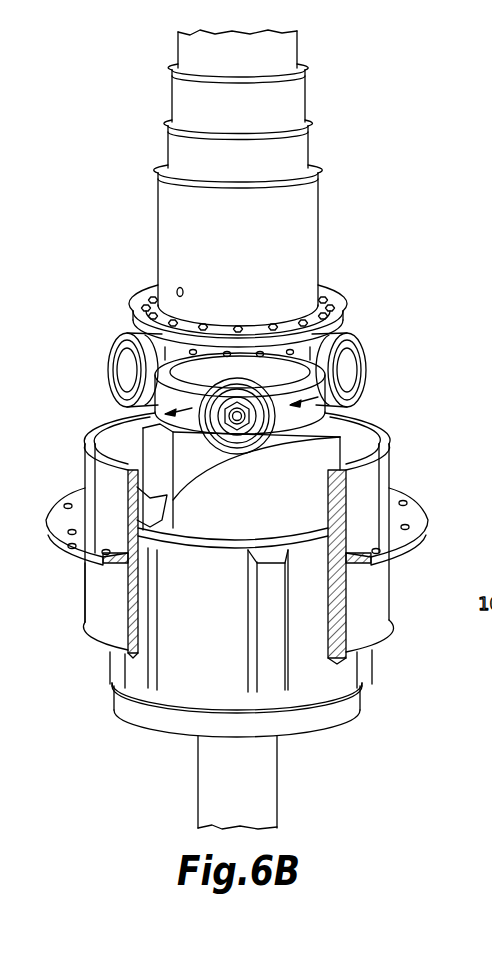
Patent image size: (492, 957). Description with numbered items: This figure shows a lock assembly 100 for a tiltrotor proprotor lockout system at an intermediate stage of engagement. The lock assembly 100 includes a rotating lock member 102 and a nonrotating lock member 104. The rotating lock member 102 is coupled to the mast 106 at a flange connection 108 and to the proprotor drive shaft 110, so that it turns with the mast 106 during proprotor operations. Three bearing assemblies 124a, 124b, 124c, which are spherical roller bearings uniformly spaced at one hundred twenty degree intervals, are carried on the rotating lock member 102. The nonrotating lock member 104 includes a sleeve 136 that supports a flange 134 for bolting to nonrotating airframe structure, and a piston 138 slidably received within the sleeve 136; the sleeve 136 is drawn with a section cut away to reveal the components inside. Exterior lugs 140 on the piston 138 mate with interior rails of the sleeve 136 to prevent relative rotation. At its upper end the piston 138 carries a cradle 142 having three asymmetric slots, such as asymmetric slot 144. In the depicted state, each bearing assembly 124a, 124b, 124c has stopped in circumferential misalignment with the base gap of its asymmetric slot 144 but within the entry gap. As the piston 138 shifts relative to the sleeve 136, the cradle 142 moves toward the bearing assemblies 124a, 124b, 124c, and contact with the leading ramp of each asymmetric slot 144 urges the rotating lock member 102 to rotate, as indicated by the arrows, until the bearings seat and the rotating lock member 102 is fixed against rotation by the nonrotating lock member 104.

The lock assembly 100 is at (380, 306).
The rotating lock member 102 is at (342, 345).
The nonrotating lock member 104 is at (383, 603).
The mast 106 is at (308, 218).
The flange connection 108 is at (133, 320).
The proprotor drive shaft 110 is at (272, 808).
The bearing assembly 124a is at (257, 450).
The bearing assembly 124b is at (365, 375).
The bearing assembly 124c is at (117, 370).
The flange 134 is at (417, 515).
The sleeve 136 is at (383, 467).
The piston 138 is at (347, 698).
The exterior lugs 140 is at (283, 713).
The cradle 142 is at (277, 512).
The asymmetric slot 144 is at (66, 547).